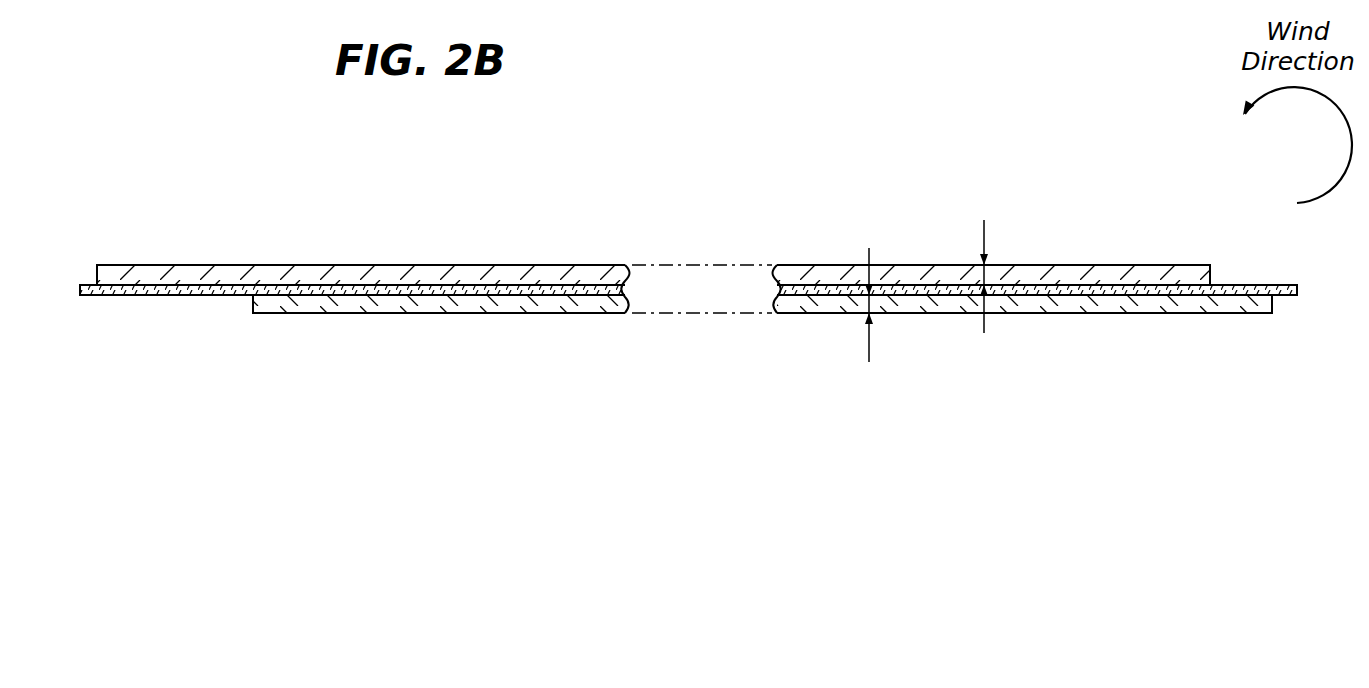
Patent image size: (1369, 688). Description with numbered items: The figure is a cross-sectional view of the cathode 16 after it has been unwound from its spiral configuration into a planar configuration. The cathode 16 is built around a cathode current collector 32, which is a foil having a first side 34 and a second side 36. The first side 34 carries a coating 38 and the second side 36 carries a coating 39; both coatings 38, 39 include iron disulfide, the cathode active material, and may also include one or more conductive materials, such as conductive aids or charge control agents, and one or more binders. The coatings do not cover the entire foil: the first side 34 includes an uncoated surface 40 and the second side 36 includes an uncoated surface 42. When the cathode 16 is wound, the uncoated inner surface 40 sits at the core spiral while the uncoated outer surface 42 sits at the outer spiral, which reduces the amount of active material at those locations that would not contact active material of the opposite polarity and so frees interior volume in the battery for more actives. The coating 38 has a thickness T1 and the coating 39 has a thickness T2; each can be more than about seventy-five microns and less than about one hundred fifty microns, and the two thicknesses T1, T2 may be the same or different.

The cathode 16 is at (325, 462).
The cathode current collector 32 is at (70, 283).
The first side 34 is at (1058, 272).
The second side 36 is at (425, 308).
The coating 38 is at (571, 276).
The coating 39 is at (571, 300).
The uncoated surface 40 is at (1243, 285).
The uncoated surface 42 is at (147, 297).
The thickness T1 is at (980, 272).
The thickness T2 is at (862, 305).